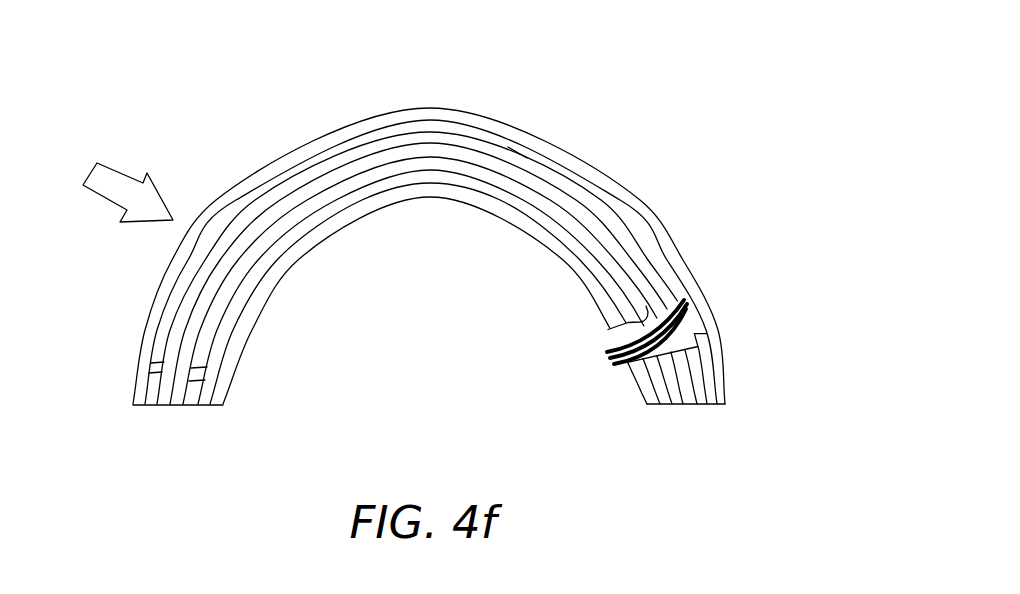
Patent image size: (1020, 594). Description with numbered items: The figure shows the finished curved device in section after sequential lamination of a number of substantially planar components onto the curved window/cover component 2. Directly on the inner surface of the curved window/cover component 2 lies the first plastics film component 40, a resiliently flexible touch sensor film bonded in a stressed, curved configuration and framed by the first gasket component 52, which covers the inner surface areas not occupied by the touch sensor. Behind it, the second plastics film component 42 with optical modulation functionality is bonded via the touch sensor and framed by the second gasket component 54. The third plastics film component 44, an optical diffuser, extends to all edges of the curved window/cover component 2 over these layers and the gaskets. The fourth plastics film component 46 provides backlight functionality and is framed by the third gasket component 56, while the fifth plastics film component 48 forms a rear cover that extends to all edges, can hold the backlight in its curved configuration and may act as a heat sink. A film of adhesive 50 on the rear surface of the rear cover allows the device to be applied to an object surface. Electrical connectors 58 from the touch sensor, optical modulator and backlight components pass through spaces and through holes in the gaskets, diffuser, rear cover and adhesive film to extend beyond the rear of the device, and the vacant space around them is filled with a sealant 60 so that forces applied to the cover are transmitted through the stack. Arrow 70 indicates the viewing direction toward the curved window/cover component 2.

The curved window/cover component 2 is at (668, 240).
The first plastics film component 40 is at (633, 222).
The second plastics film component 42 is at (577, 190).
The third plastics film component 44 is at (523, 175).
The fourth plastics film component 46 is at (580, 232).
The fifth plastics film component 48 is at (472, 185).
The film of adhesive 50 is at (370, 202).
The first gasket component 52 is at (148, 388).
The second gasket component 54 is at (697, 383).
The third gasket component 56 is at (190, 397).
The electrical connectors 58 is at (610, 358).
The sealant 60 is at (685, 322).
The direction arrow 70 is at (107, 185).